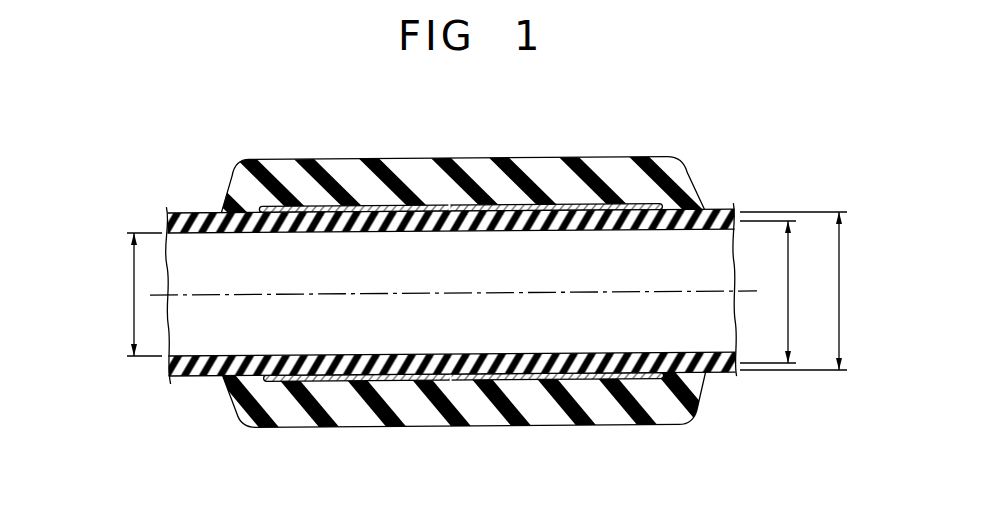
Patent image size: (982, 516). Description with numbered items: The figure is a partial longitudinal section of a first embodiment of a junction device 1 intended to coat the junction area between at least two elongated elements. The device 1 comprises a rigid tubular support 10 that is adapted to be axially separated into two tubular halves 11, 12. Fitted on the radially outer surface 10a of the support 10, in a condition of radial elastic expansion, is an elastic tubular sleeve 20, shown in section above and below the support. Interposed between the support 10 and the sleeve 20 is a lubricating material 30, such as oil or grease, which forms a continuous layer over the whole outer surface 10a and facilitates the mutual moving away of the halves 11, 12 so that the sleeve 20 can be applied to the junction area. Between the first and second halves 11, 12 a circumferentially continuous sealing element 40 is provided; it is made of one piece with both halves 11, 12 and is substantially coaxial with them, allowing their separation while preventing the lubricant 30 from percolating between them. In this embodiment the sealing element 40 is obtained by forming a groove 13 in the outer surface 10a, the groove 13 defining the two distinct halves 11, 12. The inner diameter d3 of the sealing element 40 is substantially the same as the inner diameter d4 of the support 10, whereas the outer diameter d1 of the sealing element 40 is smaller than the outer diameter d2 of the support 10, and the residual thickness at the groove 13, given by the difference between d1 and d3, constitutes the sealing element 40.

The junction device 1 is at (439, 163).
The rigid tubular support 10 is at (731, 200).
The outer surface of support 10a is at (687, 200).
The first tubular half 11 is at (730, 374).
The second tubular half 12 is at (203, 378).
The groove 13 is at (452, 213).
The elastic tubular sleeve 20 is at (548, 167).
The lubricating material 30 is at (317, 208).
The sealing element 40 is at (450, 211).
The outer diameter of sealing element d1 is at (787, 313).
The outer diameter of support d2 is at (838, 313).
The inner diameter of sealing element d3 is at (126, 274).
The inner diameter of support d4 is at (133, 292).